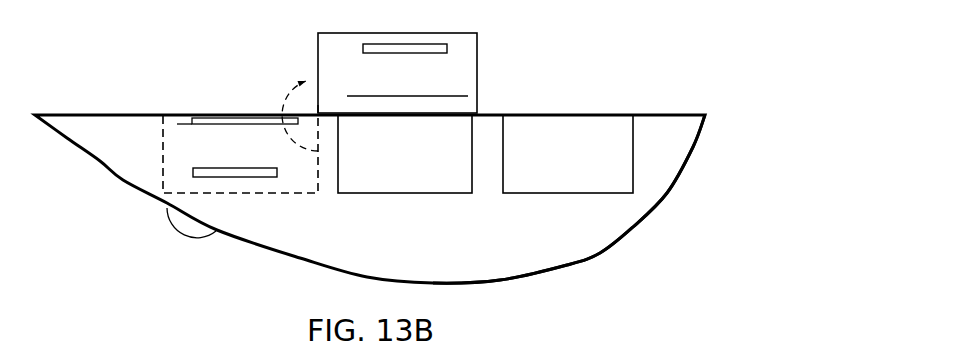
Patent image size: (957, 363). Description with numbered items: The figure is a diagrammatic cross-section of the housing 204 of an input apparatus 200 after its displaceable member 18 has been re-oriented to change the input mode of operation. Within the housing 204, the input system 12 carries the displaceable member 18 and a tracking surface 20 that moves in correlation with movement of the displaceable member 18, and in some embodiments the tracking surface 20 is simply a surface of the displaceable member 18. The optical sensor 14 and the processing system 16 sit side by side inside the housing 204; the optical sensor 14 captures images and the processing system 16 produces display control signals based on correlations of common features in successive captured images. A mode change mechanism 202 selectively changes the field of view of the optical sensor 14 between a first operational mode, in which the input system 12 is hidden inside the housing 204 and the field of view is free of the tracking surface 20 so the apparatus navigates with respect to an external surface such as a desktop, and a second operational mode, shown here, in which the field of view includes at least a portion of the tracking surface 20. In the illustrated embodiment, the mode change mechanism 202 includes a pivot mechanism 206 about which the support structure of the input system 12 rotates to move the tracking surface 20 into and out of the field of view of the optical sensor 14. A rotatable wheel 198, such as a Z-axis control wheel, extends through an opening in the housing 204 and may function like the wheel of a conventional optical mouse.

The input system 12 is at (477, 72).
The optical sensor 14 is at (435, 193).
The processing system 16 is at (568, 193).
The displaceable member 18 is at (418, 53).
The tracking surface 20 is at (189, 115).
The rotatable wheel 198 is at (181, 236).
The input apparatus 200 is at (676, 248).
The mode change mechanism 202 is at (303, 99).
The housing 204 is at (693, 150).
The pivot mechanism 206 is at (320, 110).